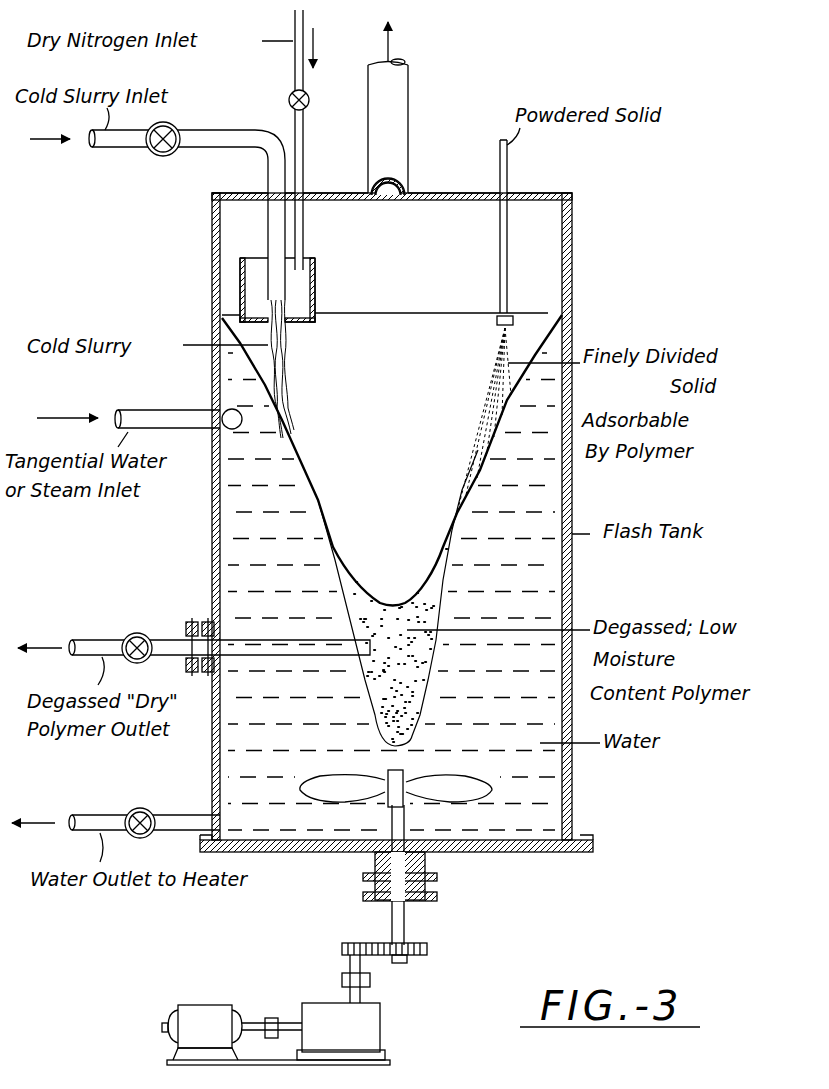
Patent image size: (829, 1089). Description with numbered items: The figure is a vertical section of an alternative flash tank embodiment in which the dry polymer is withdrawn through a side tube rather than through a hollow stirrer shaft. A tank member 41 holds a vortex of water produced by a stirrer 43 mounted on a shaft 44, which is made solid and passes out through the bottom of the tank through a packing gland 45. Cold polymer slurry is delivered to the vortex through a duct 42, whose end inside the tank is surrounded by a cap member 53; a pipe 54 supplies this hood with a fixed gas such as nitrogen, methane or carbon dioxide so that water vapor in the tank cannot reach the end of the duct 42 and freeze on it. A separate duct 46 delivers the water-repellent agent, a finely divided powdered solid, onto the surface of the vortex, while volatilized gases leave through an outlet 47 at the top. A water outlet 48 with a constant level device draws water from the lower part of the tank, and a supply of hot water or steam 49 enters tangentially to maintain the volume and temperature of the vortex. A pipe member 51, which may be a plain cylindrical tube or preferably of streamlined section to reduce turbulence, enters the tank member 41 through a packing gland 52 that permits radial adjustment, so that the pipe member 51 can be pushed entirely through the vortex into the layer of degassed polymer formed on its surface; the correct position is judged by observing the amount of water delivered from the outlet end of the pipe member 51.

The tank member 41 is at (572, 255).
The duct 42 is at (270, 172).
The stirrer 43 is at (473, 787).
The shaft 44 is at (405, 820).
The packing gland 45 is at (433, 877).
The duct 46 is at (508, 168).
The outlet 47 is at (402, 170).
The water outlet 48 is at (97, 818).
The supply of hot water or steam 49 is at (165, 410).
The pipe member 51 is at (92, 640).
The packing gland 52 is at (195, 624).
The cap member 53 is at (240, 290).
The pipe 54 is at (305, 152).